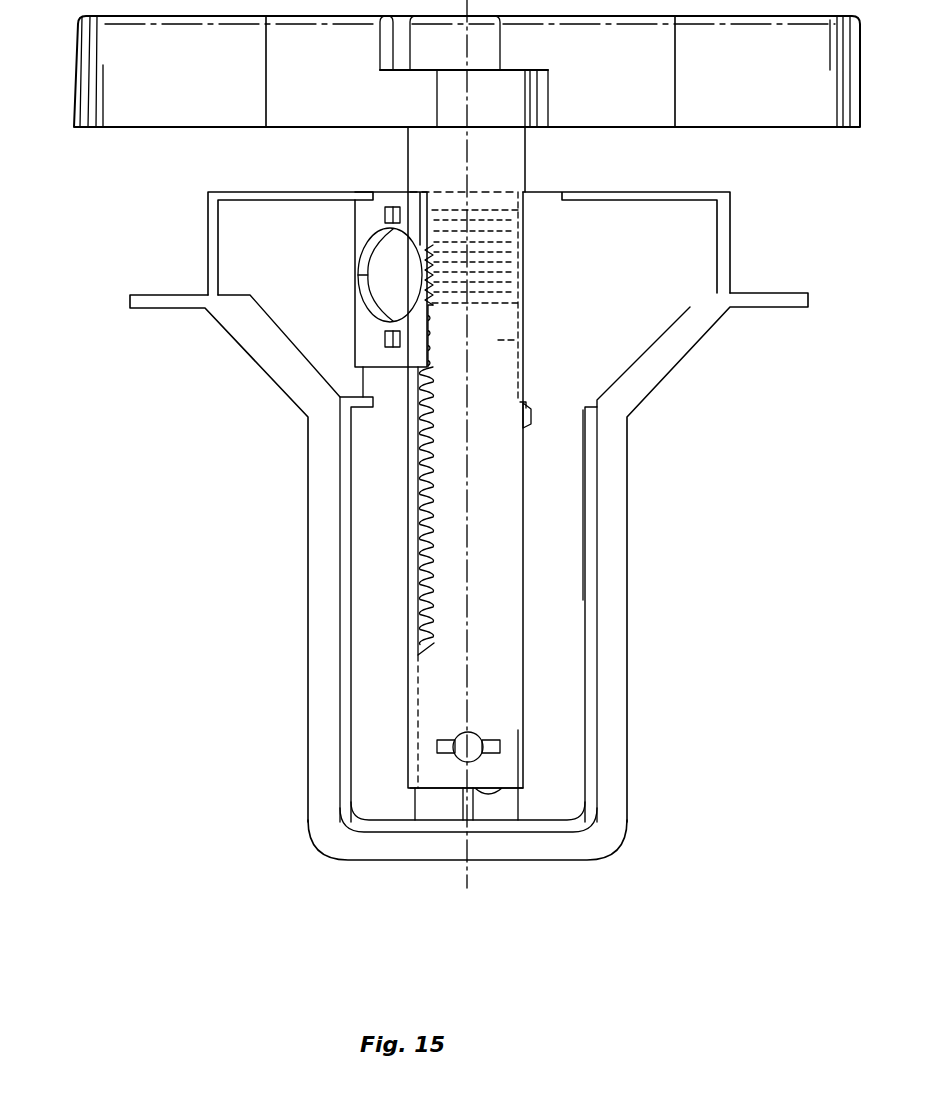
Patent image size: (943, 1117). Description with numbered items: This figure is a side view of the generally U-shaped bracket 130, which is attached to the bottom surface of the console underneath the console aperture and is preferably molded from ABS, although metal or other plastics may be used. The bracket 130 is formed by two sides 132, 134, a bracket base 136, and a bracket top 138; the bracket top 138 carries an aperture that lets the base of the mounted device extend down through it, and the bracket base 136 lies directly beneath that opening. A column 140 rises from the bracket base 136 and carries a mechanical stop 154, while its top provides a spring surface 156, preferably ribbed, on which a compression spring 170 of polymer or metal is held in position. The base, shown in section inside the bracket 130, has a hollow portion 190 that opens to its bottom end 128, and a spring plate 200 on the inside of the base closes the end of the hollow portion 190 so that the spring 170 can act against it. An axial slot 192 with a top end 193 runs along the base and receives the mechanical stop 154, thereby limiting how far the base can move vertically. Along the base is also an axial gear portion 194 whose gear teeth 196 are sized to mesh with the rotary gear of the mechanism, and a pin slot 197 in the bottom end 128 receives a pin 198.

The bracket 130 is at (138, 260).
The side 132 is at (308, 615).
The side 134 is at (627, 595).
The bracket base 136 is at (543, 861).
The bracket top 138 is at (265, 192).
The column 140 is at (425, 808).
The bottom end 128 is at (530, 786).
The mechanical stop 154 is at (522, 407).
The spring surface 156 is at (513, 313).
The compression spring 170 is at (515, 220).
The hollow portion 190 is at (498, 341).
The axial slot 192 is at (528, 527).
The top end 193 is at (531, 425).
The axial gear portion 194 is at (427, 568).
The gear teeth 196 is at (427, 498).
The pin slot 197 is at (440, 748).
The pin 198 is at (500, 746).
The spring plate 200 is at (500, 197).